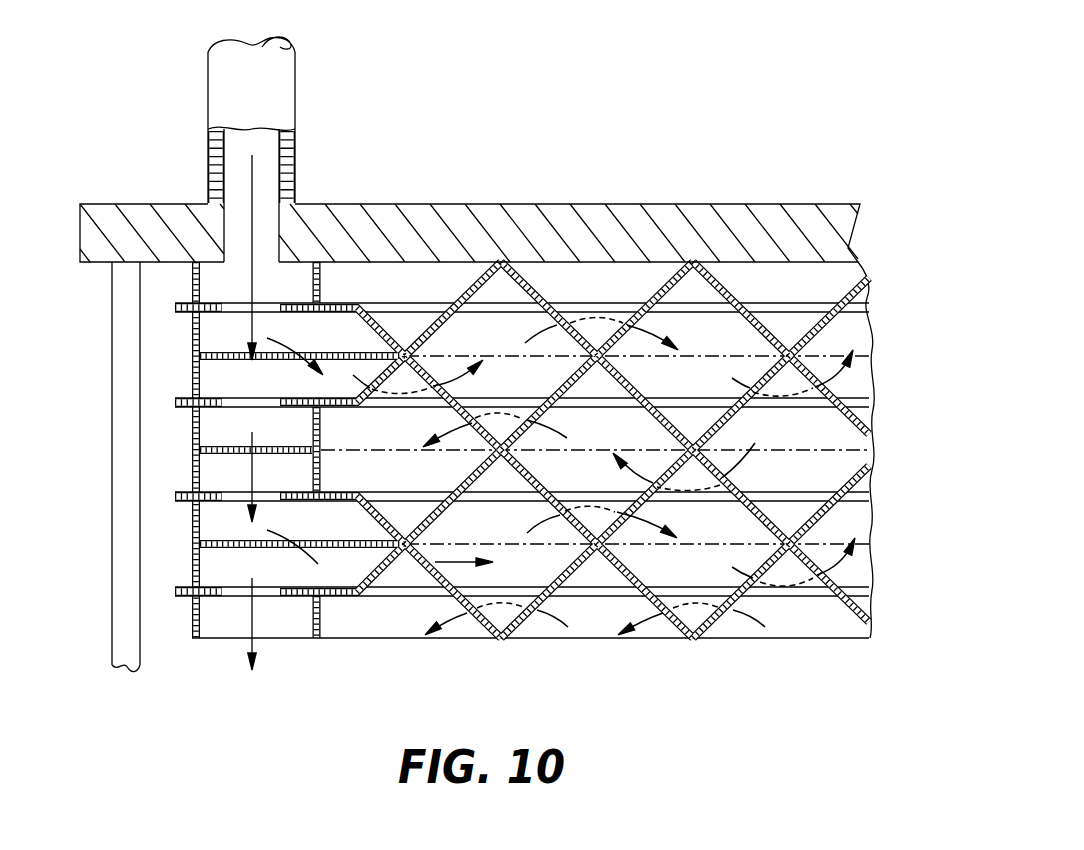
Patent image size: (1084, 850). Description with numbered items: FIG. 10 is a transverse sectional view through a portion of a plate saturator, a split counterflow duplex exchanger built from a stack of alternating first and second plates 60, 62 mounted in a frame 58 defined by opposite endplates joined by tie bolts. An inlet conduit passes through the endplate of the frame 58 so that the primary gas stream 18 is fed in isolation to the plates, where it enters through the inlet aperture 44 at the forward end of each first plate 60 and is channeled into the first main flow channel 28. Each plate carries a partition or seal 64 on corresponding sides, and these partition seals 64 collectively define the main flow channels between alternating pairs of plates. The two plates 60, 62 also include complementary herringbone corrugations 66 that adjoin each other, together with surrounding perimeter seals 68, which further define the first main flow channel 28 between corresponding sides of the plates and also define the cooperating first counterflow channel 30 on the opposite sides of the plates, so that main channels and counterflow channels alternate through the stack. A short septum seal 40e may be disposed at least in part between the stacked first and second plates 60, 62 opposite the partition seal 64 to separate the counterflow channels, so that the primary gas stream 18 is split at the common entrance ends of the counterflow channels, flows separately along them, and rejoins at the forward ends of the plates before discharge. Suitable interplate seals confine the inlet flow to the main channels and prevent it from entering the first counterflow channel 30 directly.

The primary gas stream 18 is at (252, 176).
The frame 58 is at (697, 204).
The herringbone corrugations 66 is at (549, 277).
The septum seal 40e is at (827, 278).
The partition seal 64 is at (217, 567).
The second plate 62 is at (175, 307).
The first plate 60 is at (175, 401).
The inlet aperture 44 is at (232, 400).
The perimeter seal 68 is at (192, 612).
The first main flow channel 28 is at (706, 393).
The first counterflow channel 30 is at (807, 444).